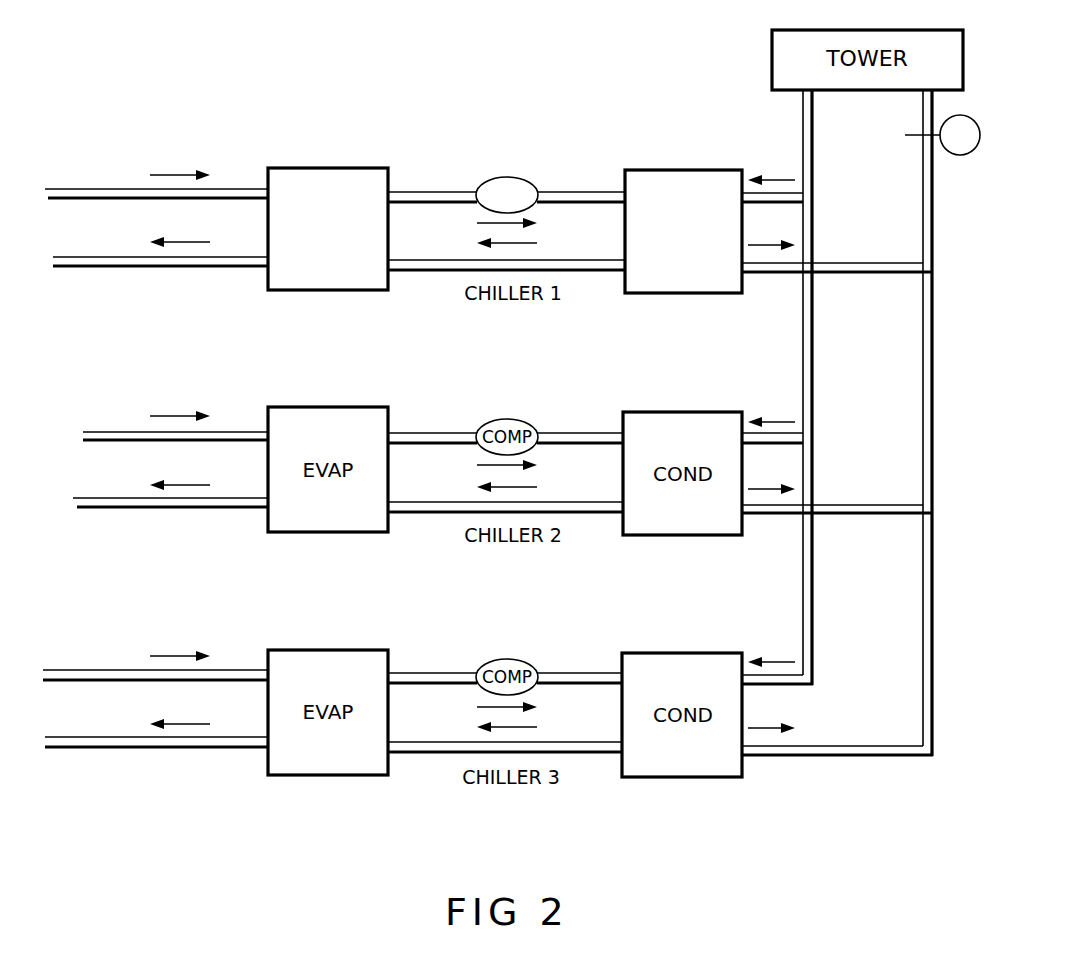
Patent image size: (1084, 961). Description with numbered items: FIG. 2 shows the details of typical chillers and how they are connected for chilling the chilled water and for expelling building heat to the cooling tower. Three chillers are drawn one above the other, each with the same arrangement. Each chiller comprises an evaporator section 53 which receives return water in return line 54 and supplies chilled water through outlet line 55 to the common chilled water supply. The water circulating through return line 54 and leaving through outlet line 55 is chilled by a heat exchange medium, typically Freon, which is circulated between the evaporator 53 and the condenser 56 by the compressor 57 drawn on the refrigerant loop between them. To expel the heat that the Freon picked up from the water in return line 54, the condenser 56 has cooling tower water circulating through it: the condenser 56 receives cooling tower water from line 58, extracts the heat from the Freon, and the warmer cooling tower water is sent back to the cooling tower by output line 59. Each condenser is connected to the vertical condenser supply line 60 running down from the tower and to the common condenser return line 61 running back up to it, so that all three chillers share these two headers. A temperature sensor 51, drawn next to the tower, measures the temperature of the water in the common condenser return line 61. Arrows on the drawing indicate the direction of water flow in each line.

The temperature sensor 51 is at (968, 157).
The evaporator section 53 is at (365, 292).
The return line 54 is at (192, 199).
The outlet line 55 is at (187, 267).
The condenser 56 is at (710, 297).
The compressor 57 is at (500, 178).
The line 58 is at (790, 208).
The output line 59 is at (790, 275).
The condenser supply line 60 is at (801, 337).
The condenser return line 61 is at (935, 295).